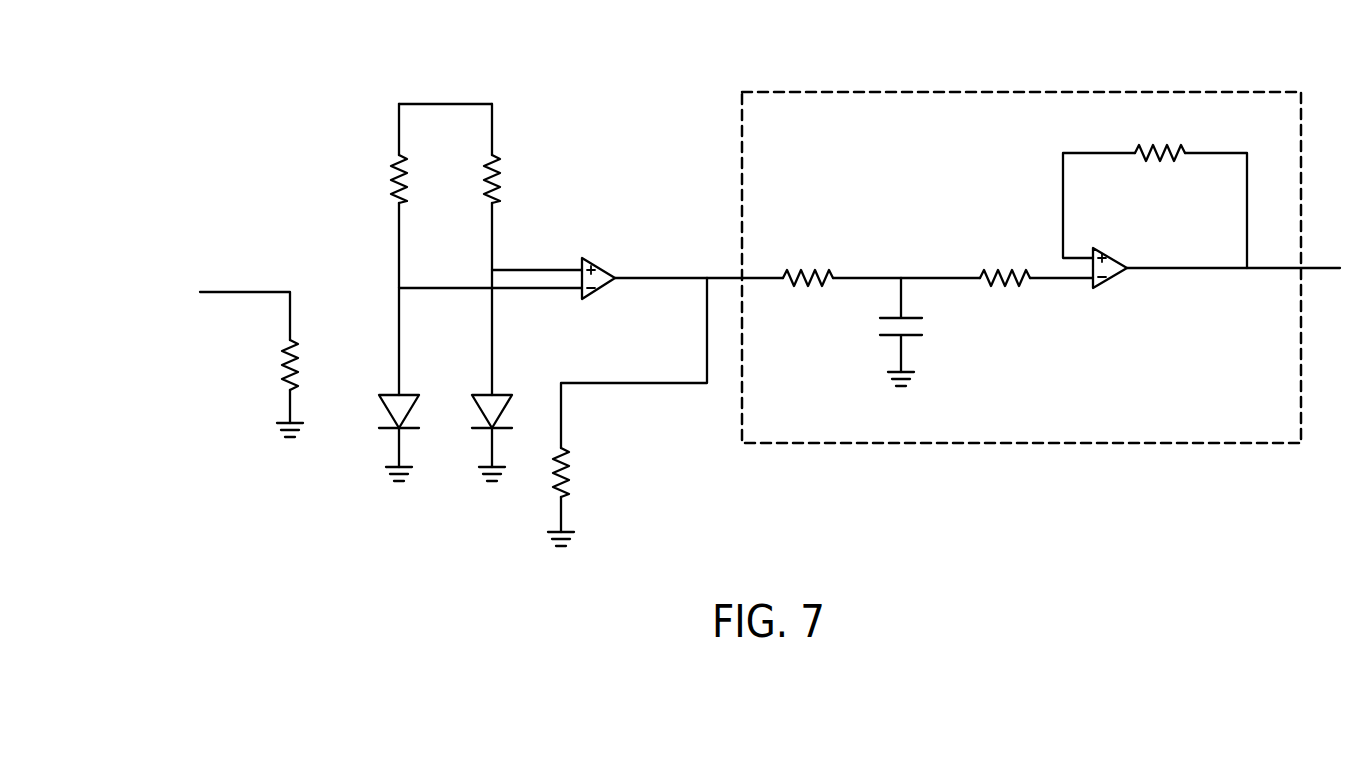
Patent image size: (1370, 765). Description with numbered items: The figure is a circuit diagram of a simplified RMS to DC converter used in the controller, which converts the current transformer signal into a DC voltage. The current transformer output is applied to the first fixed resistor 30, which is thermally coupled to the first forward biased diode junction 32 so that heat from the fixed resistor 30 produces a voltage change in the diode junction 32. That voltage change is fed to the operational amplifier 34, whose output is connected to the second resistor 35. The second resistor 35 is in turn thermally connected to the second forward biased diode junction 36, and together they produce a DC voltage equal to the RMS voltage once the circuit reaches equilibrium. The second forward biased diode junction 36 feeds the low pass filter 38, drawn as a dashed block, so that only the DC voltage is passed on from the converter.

The first fixed resistor 30 is at (283, 368).
The first forward biased diode junction 32 is at (392, 395).
The second forward biased diode junction 36 is at (484, 395).
The operational amplifier 34 is at (593, 262).
The second resistor 35 is at (568, 483).
The low pass filter 38 is at (1039, 92).